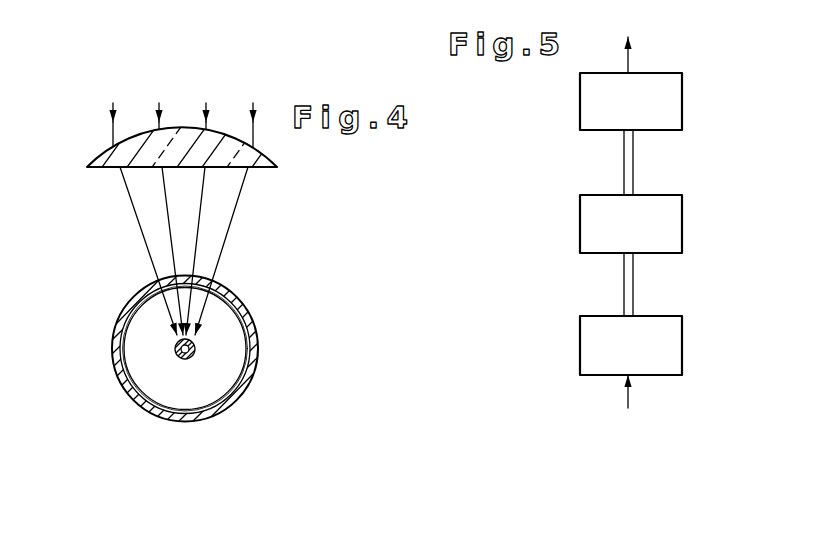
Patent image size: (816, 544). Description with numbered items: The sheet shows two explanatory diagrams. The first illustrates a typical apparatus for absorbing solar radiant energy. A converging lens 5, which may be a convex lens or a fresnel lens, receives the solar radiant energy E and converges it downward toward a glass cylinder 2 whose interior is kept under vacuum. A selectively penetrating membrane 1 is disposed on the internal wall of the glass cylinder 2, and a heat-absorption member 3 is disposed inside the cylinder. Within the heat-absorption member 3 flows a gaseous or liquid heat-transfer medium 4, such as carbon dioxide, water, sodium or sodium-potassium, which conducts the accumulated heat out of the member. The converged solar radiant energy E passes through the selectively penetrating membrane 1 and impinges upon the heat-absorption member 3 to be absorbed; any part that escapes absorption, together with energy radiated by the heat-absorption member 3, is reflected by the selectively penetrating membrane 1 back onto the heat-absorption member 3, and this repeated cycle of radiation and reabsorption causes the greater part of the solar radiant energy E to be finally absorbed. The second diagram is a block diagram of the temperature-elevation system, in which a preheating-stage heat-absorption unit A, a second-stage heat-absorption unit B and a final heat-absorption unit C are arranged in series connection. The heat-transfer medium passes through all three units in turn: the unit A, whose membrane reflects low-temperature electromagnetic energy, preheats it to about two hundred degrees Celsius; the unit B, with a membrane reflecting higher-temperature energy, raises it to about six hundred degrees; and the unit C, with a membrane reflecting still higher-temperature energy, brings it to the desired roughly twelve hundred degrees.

In FIG. 4, the selectively penetrating membrane 1 is at (234, 323).
In FIG. 4, the glass cylinder 2 is at (251, 366).
In FIG. 4, the heat-absorption member 3 is at (175, 349).
In FIG. 4, the heat-transfer medium 4 is at (184, 358).
In FIG. 4, the converging lens 5 is at (128, 157).
In FIG. 4, the solar radiant energy E is at (100, 92).
In FIG. 5, the heat-absorption unit of the preheating stage A is at (588, 354).
In FIG. 5, the second-stage heat-absorption unit B is at (596, 232).
In FIG. 5, the heat-absorption unit C is at (597, 108).